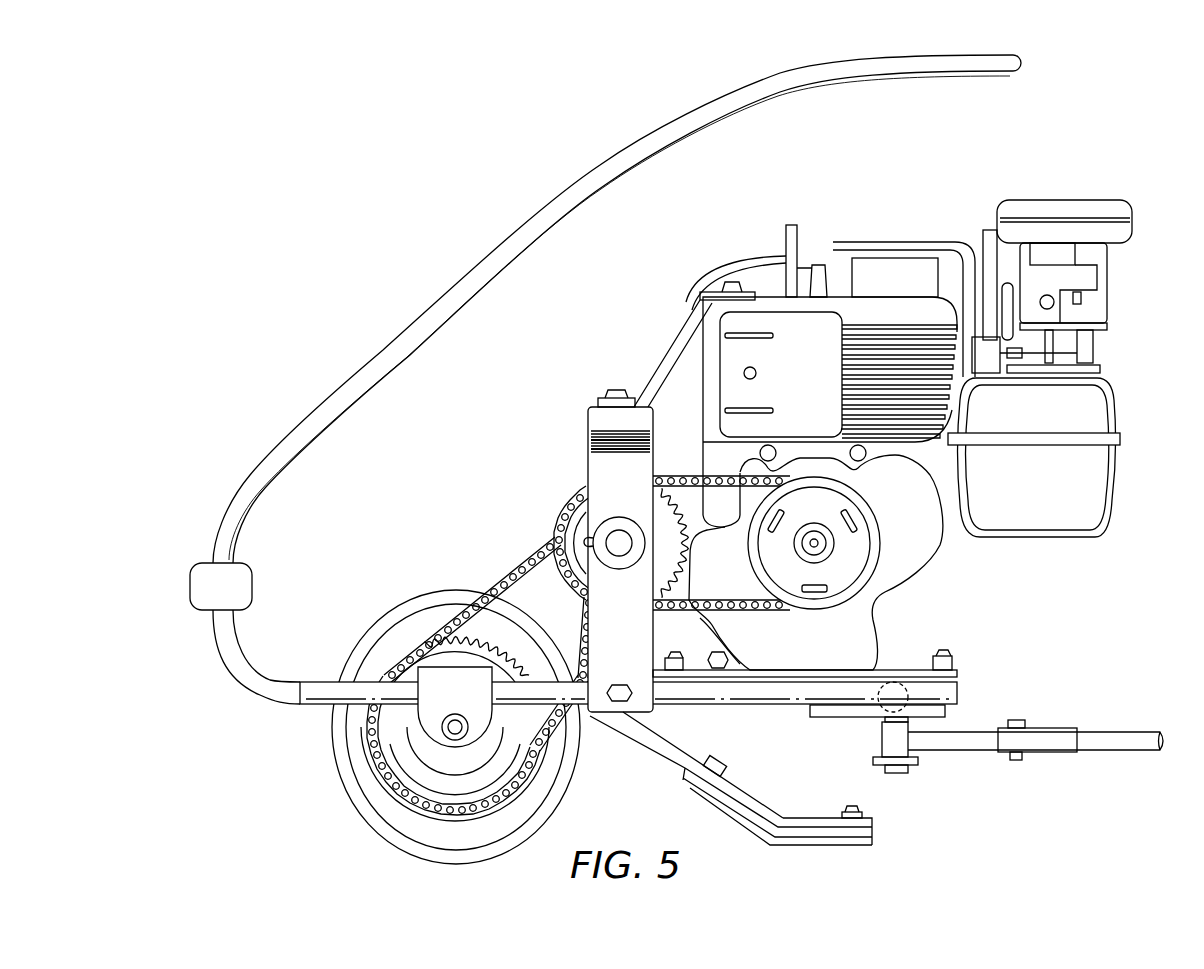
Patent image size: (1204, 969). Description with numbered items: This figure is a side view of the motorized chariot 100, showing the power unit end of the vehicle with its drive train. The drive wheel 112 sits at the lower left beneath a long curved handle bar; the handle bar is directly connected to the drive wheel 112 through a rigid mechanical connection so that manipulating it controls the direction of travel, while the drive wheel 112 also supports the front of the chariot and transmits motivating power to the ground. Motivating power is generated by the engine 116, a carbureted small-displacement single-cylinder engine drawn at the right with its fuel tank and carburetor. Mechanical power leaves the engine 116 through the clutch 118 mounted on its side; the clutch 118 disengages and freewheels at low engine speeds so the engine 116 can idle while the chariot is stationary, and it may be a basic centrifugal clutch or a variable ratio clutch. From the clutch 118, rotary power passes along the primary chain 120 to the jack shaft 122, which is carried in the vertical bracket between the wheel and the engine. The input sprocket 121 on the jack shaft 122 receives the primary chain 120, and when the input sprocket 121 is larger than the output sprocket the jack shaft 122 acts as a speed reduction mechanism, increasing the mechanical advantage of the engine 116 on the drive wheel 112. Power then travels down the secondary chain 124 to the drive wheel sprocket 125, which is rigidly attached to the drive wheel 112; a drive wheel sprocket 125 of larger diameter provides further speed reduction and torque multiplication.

The motorized chariot 100 is at (240, 283).
The drive wheel 112 is at (333, 740).
The engine 116 is at (942, 540).
The clutch 118 is at (750, 556).
The primary chain 120 is at (773, 612).
The input sprocket 121 is at (548, 534).
The jack shaft 122 is at (621, 518).
The secondary chain 124 is at (505, 572).
The drive wheel sprocket 125 is at (405, 765).